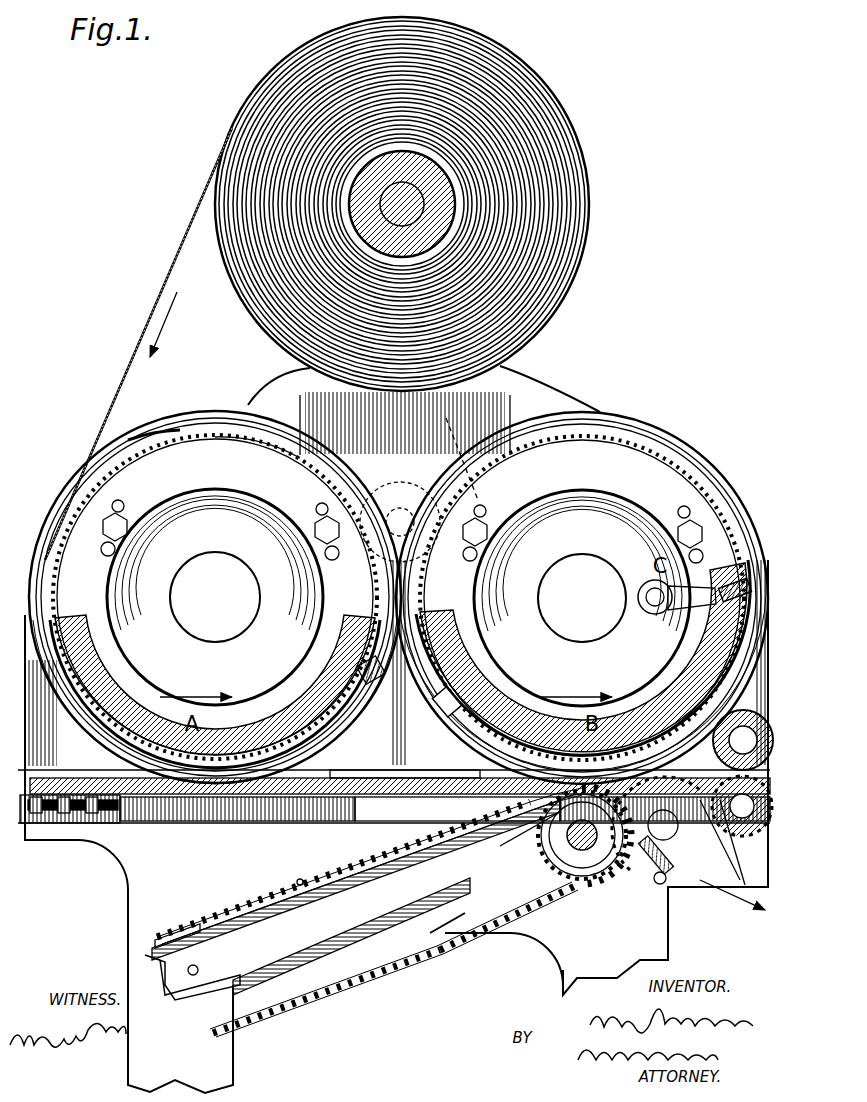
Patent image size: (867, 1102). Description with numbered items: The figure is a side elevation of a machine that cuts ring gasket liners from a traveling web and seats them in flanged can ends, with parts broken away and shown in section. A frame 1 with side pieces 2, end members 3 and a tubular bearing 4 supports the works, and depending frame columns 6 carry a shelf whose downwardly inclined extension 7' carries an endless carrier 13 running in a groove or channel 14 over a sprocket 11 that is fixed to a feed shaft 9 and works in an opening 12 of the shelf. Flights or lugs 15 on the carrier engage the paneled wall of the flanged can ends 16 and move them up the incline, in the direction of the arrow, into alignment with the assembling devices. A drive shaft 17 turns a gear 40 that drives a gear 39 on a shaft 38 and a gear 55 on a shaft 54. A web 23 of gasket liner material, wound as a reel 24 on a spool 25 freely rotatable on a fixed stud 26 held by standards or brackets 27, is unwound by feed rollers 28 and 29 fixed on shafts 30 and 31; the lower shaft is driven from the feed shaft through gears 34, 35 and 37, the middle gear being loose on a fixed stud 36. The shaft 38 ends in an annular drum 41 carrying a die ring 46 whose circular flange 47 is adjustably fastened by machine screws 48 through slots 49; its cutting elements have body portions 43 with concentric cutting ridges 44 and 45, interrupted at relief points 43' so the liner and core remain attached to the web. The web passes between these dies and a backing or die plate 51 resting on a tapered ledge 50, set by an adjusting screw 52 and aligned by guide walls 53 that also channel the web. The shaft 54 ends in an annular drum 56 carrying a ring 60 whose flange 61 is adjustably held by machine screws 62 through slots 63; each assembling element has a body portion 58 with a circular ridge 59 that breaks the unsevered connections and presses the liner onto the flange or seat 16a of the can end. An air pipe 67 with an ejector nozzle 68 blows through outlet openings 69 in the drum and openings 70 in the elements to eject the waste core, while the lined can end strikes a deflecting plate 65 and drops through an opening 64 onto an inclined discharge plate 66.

The frame 1 is at (522, 400).
The side pieces 2 is at (180, 5).
The end members 3 is at (580, 1018).
The tubular bearing 4 is at (37, 766).
The frame columns 6 is at (130, 982).
The inclined extension of shelf 7' is at (356, 880).
The feed shaft 9 is at (453, 917).
The sprocket 11 is at (600, 860).
The opening 12 is at (530, 829).
The endless carrier 13 is at (330, 890).
The groove or channel 14 is at (195, 925).
The flights or lugs 15 is at (262, 1012).
The flanged can ends 16 is at (240, 876).
The flange or seat of can end 16a is at (282, 858).
The drive shaft 17 is at (408, 508).
The web of gasket liner material 23 is at (150, 300).
The reel 24 is at (548, 172).
The spool 25 is at (425, 176).
The stud 26 is at (420, 212).
The standards or brackets 27 is at (300, 376).
The upper feed roller 28 is at (745, 725).
The lower feed roller 29 is at (745, 838).
The idler shaft 30 is at (729, 740).
The lower feed roller shaft 31 is at (742, 888).
The gear 34 is at (732, 899).
The gear 35 is at (656, 835).
The fixed stud 36 is at (655, 814).
The gear 37 is at (584, 852).
The shaft 38 is at (186, 556).
The gear 39 is at (322, 430).
The gear 40 is at (385, 485).
The annular drum 41 is at (112, 620).
The body portion of cutting element 43 is at (215, 673).
The interruptions or relief points 43' is at (266, 548).
The cutting ridge 44 is at (215, 597).
The cutting ridge 45 is at (100, 458).
The die ring 46 is at (168, 440).
The circular flange of die ring 47 is at (262, 470).
The machine screws 48 is at (300, 548).
The slots 49 is at (122, 512).
The ledge or supporting shelf 50 is at (394, 796).
The backing or die plate 51 is at (100, 775).
The adjusting screw 52 is at (75, 820).
The guide walls 53 is at (350, 770).
The shaft 54 is at (605, 552).
The gear 55 is at (457, 448).
The annular drum 56 is at (475, 615).
The body portion of assembling element 58 is at (620, 430).
The circular ridge 59 is at (525, 438).
The ring 60 is at (655, 448).
The circular flange of ring 61 is at (650, 485).
The machine screws 62 is at (495, 570).
The slots 63 is at (480, 516).
The opening 64 is at (680, 880).
The deflecting plate 65 is at (700, 885).
The discharge plate 66 is at (660, 870).
The air pipe 67 is at (652, 615).
The ejector nozzle 68 is at (690, 605).
The outlet openings 69 is at (715, 545).
The opening 70 is at (752, 575).